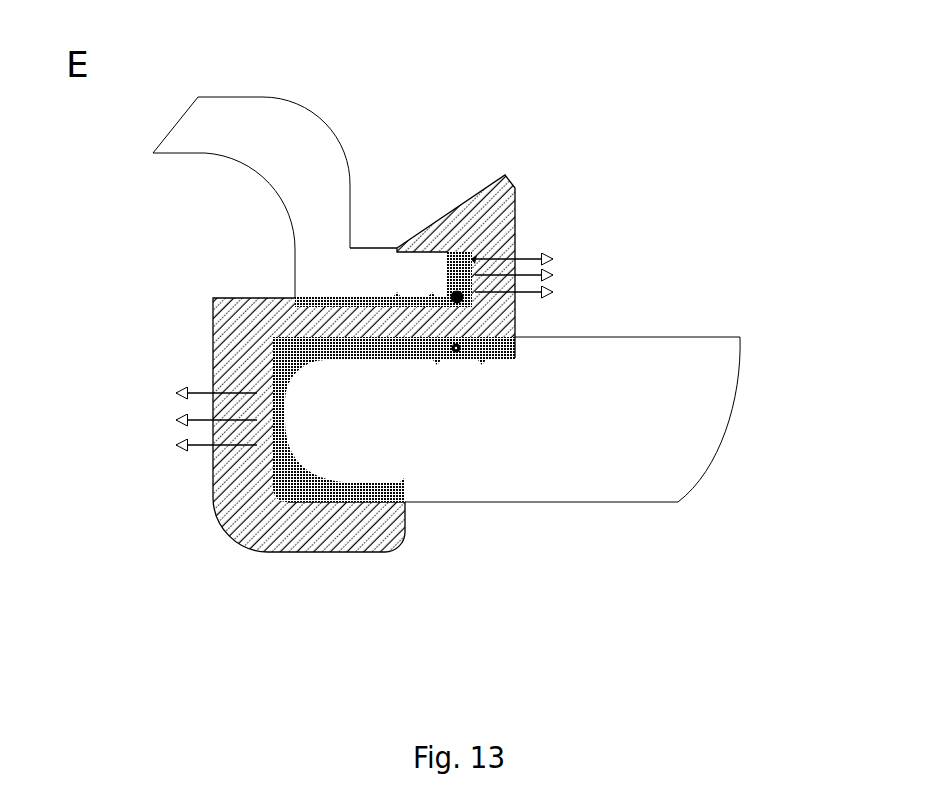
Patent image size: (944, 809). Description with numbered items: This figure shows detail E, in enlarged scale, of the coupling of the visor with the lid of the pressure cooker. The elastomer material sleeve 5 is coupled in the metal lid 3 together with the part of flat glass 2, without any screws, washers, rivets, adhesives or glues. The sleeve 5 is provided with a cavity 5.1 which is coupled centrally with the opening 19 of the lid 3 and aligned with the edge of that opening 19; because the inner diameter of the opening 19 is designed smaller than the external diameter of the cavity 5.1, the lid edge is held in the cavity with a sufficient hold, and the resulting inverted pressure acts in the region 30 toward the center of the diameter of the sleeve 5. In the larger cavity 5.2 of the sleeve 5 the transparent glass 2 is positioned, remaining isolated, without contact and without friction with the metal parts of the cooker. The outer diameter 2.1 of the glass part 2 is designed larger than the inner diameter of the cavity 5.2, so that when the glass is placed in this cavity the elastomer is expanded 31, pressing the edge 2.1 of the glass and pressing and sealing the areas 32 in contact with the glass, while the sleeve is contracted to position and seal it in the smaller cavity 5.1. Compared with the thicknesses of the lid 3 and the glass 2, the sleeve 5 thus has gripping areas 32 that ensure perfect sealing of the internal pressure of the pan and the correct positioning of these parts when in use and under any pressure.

The flat glass part 2 is at (583, 408).
The outer diameter of the glass part 2.1 is at (270, 423).
The metal lid 3 is at (320, 168).
The elastomer material sleeve 5 is at (255, 347).
The sleeve cavity 5.1 is at (443, 277).
The sleeve cavity 5.2 is at (295, 430).
The opening 19 is at (515, 188).
The inverted pressure region 30 is at (553, 273).
The expansion pressure 31 is at (170, 430).
The gripping areas 32 is at (457, 297).